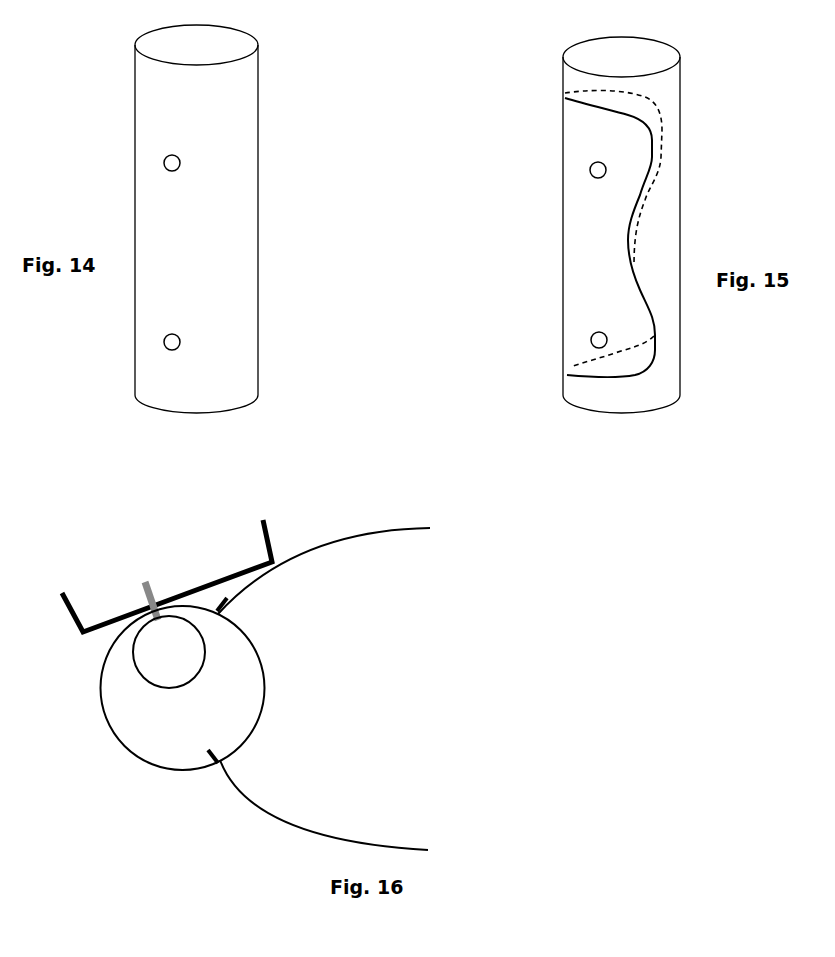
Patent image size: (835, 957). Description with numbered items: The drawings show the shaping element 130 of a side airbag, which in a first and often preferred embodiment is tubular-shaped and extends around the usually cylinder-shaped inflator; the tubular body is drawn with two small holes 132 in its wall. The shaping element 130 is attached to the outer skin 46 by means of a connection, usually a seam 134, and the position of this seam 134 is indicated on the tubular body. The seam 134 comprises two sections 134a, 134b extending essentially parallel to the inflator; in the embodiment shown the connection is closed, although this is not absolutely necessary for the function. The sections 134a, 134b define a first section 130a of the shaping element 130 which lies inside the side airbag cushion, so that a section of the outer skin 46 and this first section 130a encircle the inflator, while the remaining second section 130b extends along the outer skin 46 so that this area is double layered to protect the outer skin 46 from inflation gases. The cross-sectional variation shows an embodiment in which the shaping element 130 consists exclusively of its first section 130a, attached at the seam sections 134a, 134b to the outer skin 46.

In FIG. 14, the shaping element 130 is at (212, 235).
In FIG. 14, the holes 132 is at (180, 341).
In FIG. 15, the first section of the shaping element 130a is at (675, 157).
In FIG. 16, the first section of the shaping element 130a is at (263, 680).
In FIG. 15, the second section of the shaping element 130b is at (588, 233).
In FIG. 15, the seam 134 is at (647, 177).
In FIG. 16, the outer skin 46 is at (373, 530).
In FIG. 16, the first section of the seam 134a is at (215, 607).
In FIG. 16, the second section of the seam 134b is at (213, 765).